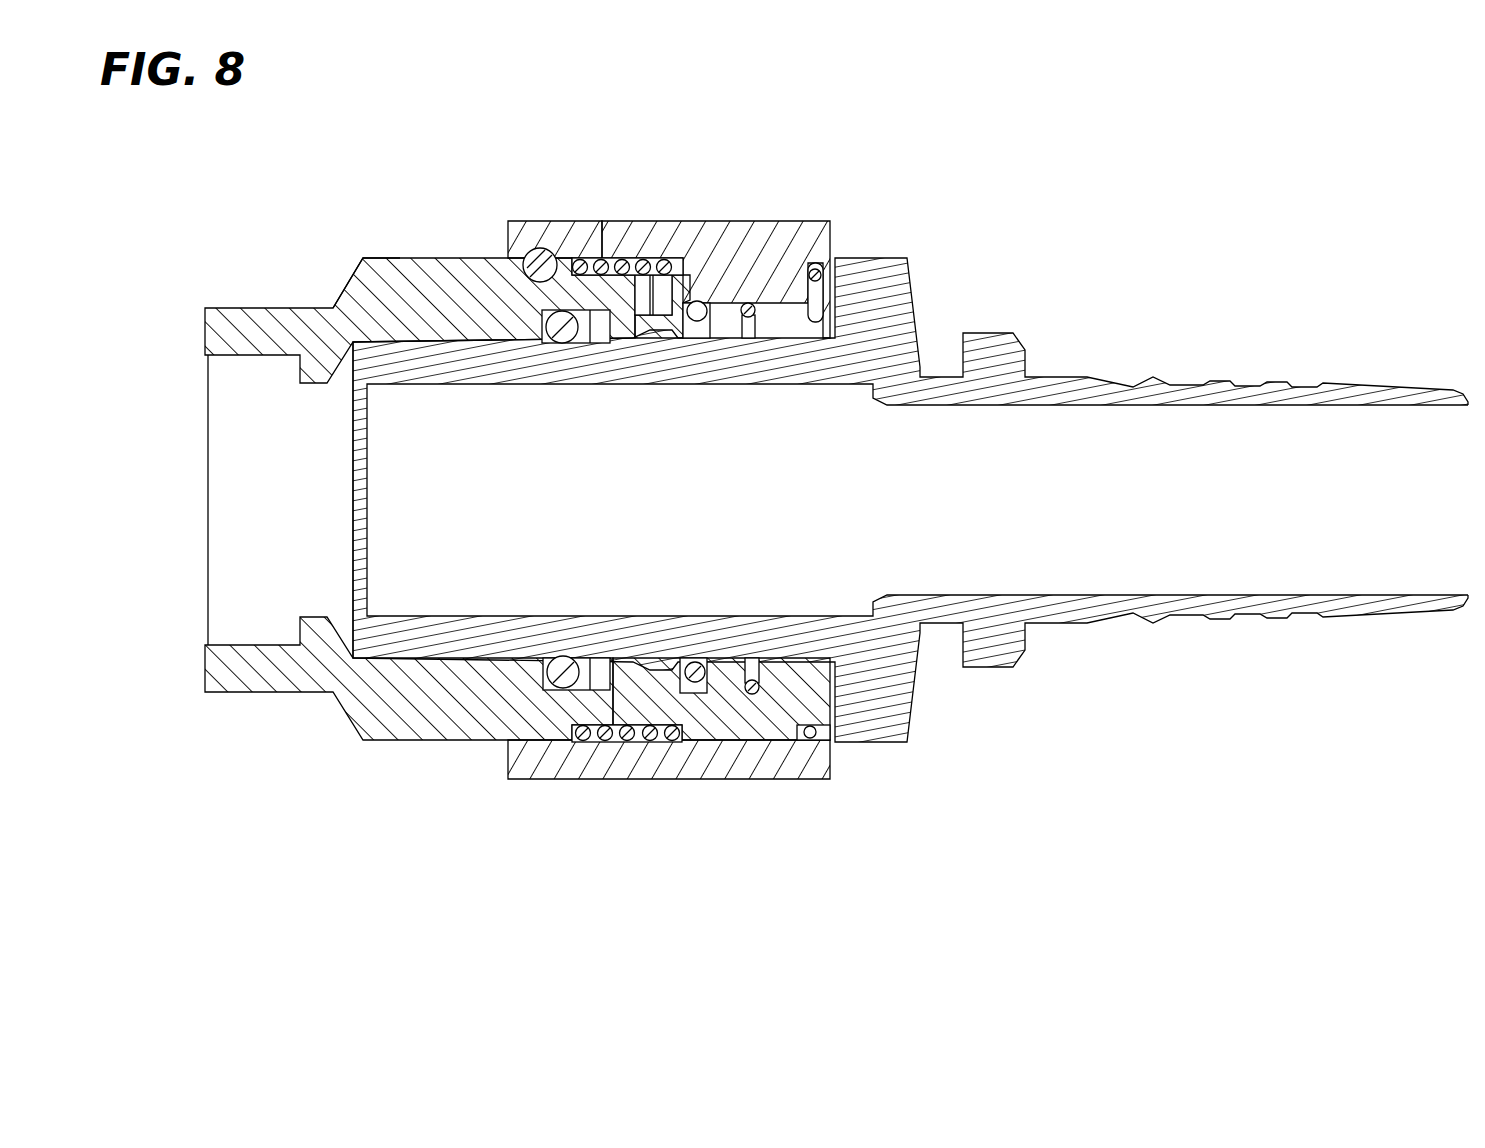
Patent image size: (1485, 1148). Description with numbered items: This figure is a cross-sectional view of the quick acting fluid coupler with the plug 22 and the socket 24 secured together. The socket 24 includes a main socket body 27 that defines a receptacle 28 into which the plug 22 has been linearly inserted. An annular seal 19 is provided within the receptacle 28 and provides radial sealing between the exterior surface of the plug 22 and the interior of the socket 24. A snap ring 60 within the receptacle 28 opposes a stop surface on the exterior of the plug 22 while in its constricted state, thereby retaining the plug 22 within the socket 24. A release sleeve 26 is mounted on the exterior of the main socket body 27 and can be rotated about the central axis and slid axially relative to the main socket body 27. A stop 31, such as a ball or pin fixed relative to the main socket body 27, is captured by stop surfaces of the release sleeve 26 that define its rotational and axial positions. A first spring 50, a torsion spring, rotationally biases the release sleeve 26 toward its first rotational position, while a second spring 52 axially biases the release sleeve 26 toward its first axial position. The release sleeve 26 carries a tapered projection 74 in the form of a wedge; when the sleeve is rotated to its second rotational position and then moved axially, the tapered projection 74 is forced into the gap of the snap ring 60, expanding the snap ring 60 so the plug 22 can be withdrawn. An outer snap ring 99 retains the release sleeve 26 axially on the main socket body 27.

The plug 22 is at (1083, 355).
The socket 24 is at (428, 240).
The release sleeve 26 is at (717, 222).
The main socket body 27 is at (370, 256).
The receptacle 28 is at (382, 657).
The stop 31 is at (542, 248).
The annular seal 19 is at (556, 672).
The second spring 52 is at (630, 742).
The snap ring 60 is at (700, 305).
The tapered projection 74 is at (752, 303).
The first spring 50 is at (753, 695).
The outer snap ring 99 is at (819, 288).